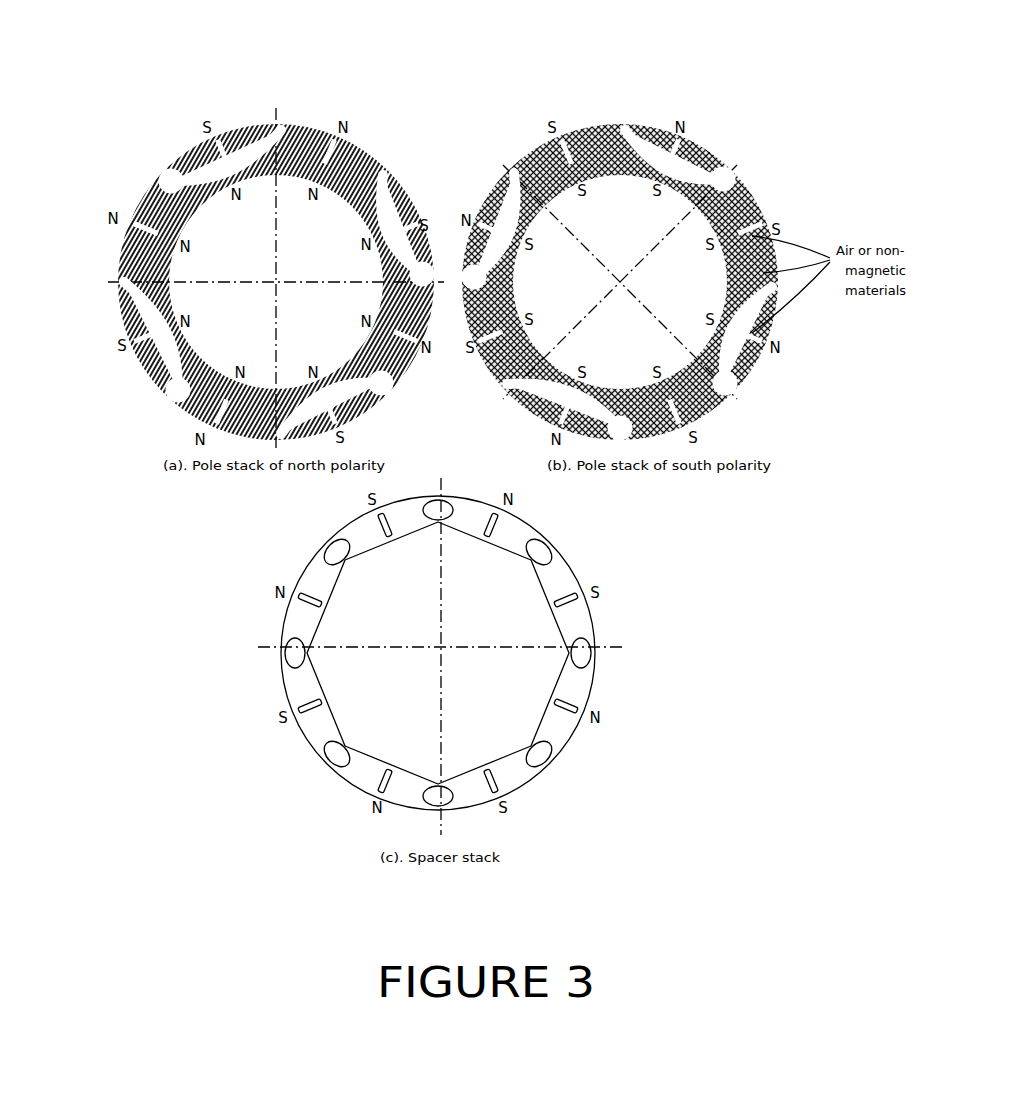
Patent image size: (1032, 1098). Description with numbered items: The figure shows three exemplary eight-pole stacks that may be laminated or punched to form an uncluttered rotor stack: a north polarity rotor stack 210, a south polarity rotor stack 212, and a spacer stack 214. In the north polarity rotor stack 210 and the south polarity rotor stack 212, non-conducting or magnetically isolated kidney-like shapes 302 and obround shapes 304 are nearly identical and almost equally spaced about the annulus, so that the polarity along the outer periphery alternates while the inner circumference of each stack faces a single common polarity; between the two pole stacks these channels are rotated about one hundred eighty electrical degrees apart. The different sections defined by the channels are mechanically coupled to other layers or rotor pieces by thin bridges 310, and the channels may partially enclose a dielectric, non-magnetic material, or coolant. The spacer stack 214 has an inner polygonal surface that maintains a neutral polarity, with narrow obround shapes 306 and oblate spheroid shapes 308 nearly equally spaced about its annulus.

The north polarity rotor stack 210 is at (224, 78).
The south polarity rotor stack 212 is at (730, 125).
The spacer stack 214 is at (600, 550).
The kidney-like shape 302 is at (386, 176).
The obround shape 304 is at (349, 147).
The narrow obround shape 306 is at (576, 604).
The oblate spheroid shape 308 is at (588, 661).
The thin bridge 310 is at (131, 226).